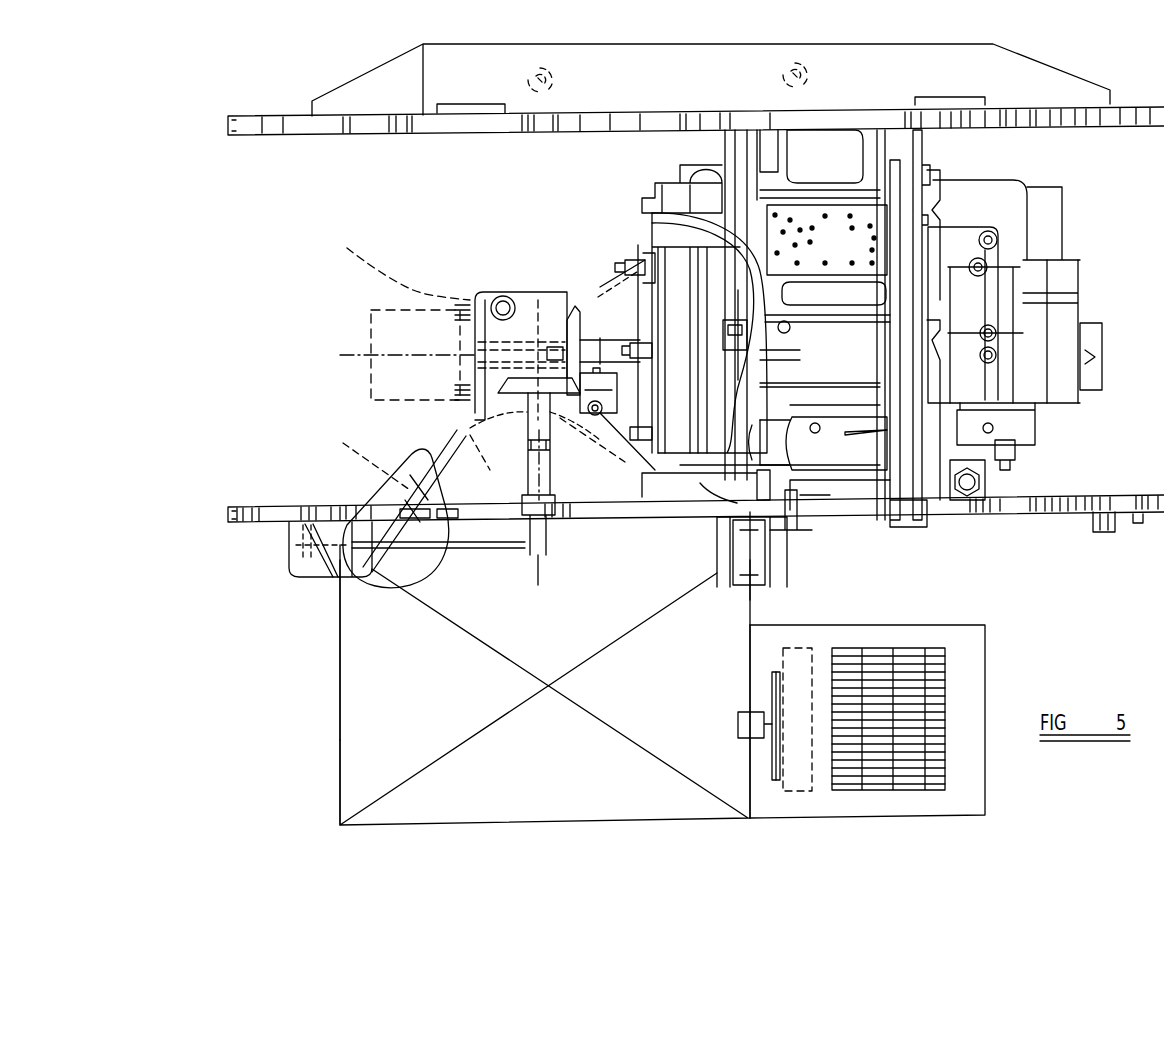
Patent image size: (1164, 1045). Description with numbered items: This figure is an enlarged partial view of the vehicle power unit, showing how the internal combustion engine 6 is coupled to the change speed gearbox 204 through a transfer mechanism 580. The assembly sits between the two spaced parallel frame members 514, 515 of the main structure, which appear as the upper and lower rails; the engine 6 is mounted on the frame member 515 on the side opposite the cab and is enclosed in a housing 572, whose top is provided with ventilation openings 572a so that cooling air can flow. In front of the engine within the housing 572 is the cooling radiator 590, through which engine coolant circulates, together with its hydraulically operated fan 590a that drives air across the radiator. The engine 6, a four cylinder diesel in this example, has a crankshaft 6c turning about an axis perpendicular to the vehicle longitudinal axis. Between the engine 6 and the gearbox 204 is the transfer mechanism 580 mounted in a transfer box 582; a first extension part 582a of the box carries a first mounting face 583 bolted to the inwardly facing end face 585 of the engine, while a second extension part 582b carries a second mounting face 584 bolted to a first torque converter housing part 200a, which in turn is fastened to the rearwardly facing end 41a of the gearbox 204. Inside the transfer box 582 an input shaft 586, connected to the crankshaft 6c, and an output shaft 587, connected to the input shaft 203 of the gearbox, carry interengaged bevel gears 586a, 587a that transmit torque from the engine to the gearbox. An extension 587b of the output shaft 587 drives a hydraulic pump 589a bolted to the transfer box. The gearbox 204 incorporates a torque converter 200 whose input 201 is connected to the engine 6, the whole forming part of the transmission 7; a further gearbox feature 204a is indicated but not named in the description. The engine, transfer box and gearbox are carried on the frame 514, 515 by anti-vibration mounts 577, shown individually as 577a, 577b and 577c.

The transmission 7 is at (300, 79).
The frame member 514 is at (1147, 112).
The frame member 515 is at (1072, 513).
The housing 572 is at (467, 828).
The ventilation openings 572a is at (947, 697).
The cooling radiator 590 is at (800, 650).
The hydraulically operated fan 590a is at (776, 780).
The internal combustion engine 6 is at (352, 641).
The crankshaft 6c is at (527, 545).
The anti-vibration mount 577a is at (330, 548).
The inwardly facing end face 585 is at (437, 545).
The first mounting face 583 is at (400, 507).
The first extension part 582a is at (343, 443).
The hydraulic pump 589a is at (371, 330).
The extension 587b is at (347, 248).
The anti-vibration mount 577 is at (467, 292).
The transfer mechanism 580 is at (474, 274).
The bevel gear 587a is at (556, 287).
The output shaft 587 is at (603, 318).
The transfer box 582 is at (577, 292).
The second extension part 582b is at (625, 260).
The bevel gear 586a is at (527, 383).
The input shaft 586 is at (528, 400).
The second mounting face 584 is at (655, 183).
The first torque converter housing part 200a is at (670, 183).
The drive shaft 204a is at (722, 250).
The rearwardly facing end 41a is at (770, 210).
The anti-vibration mount 577c is at (913, 168).
The change speed gearbox 204 is at (990, 183).
The input shaft 203 is at (790, 358).
The torque converter 200 is at (682, 475).
The input 201 is at (682, 437).
The anti-vibration mount 577b is at (787, 547).